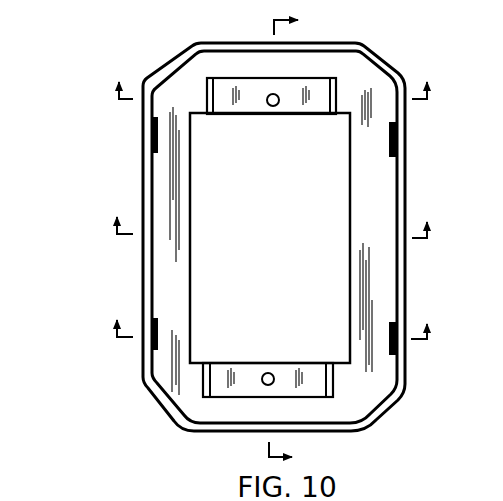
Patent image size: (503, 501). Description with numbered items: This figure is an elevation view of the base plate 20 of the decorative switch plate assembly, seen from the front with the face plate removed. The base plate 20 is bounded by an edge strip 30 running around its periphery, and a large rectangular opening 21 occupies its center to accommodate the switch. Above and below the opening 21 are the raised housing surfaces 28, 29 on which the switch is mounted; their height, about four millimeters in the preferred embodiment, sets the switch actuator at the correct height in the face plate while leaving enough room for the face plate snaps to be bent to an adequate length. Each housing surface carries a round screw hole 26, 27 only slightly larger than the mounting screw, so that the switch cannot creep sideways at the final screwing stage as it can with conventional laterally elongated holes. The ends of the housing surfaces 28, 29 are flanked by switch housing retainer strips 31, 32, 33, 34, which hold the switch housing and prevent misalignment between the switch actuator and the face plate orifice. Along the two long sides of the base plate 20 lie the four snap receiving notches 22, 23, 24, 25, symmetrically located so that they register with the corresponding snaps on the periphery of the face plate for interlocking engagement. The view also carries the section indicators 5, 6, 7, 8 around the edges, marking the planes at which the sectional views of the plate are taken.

The base plate 20 is at (168, 280).
The opening 21 is at (260, 254).
The snap receiving notch 22 is at (148, 133).
The snap receiving notch 23 is at (148, 347).
The snap receiving notch 24 is at (396, 347).
The snap receiving notch 25 is at (397, 137).
The screw hole 26 is at (262, 381).
The screw hole 27 is at (271, 93).
The housing surface 28 is at (233, 95).
The housing surface 29 is at (310, 390).
The edge strip 30 is at (403, 266).
The switch housing retainer strip 31 is at (337, 95).
The switch housing retainer strip 32 is at (333, 383).
The switch housing retainer strip 33 is at (205, 383).
The switch housing retainer strip 34 is at (210, 100).
The section line 5 is at (270, 93).
The section line 6 is at (271, 230).
The section line 7 is at (270, 333).
The section line 8 is at (300, 235).